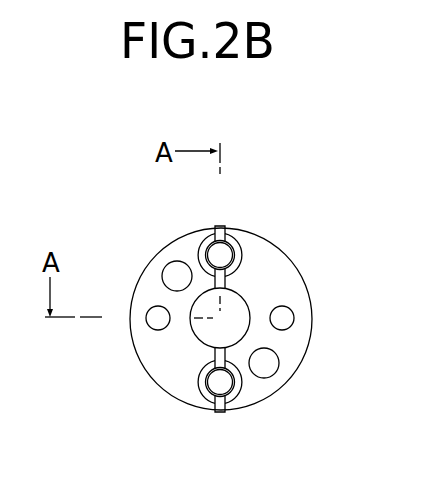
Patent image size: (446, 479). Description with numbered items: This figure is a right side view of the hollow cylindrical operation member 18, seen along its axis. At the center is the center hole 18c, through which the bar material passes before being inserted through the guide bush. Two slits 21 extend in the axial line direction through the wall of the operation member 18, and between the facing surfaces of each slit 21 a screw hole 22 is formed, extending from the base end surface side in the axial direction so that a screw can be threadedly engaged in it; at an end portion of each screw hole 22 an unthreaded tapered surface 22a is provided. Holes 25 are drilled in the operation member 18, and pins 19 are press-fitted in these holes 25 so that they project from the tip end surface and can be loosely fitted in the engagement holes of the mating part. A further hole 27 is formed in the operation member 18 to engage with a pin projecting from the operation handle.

The operation member 18 is at (173, 233).
The center hole 18c is at (223, 331).
The pins 19 is at (160, 318).
The slits 21 is at (224, 234).
The screw hole 22 is at (233, 256).
The tapered surface 22a is at (208, 246).
The holes 25 is at (152, 308).
The hole 27 is at (172, 278).